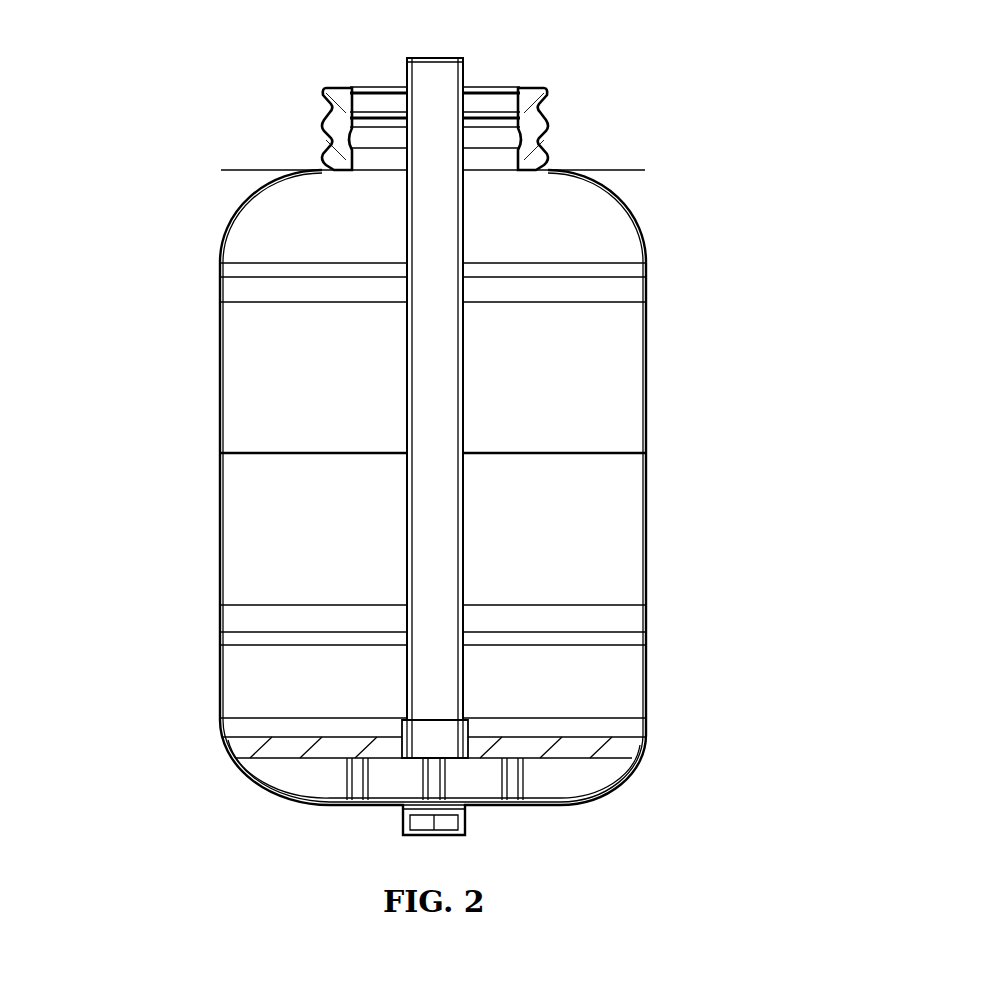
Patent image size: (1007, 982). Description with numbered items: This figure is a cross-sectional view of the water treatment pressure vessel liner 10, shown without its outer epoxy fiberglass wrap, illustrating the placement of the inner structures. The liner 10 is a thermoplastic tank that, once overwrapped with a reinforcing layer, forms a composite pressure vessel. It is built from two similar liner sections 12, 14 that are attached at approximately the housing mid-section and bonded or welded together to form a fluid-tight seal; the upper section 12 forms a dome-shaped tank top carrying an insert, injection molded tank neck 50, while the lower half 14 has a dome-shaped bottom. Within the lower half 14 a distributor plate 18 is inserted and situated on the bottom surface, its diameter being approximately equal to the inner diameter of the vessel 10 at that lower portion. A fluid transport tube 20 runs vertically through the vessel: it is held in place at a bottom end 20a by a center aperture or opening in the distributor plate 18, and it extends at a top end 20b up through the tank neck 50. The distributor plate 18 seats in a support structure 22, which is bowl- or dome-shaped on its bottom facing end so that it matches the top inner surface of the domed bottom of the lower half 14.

The liner 10 is at (702, 219).
The liner section 12 is at (244, 344).
The lower half 14 is at (244, 500).
The distributor plate 18 is at (270, 747).
The fluid transport tube 20 is at (584, 402).
The bottom end 20a is at (447, 746).
The top end 20b is at (472, 72).
The support structure 22 is at (318, 800).
The tank neck 50 is at (321, 127).